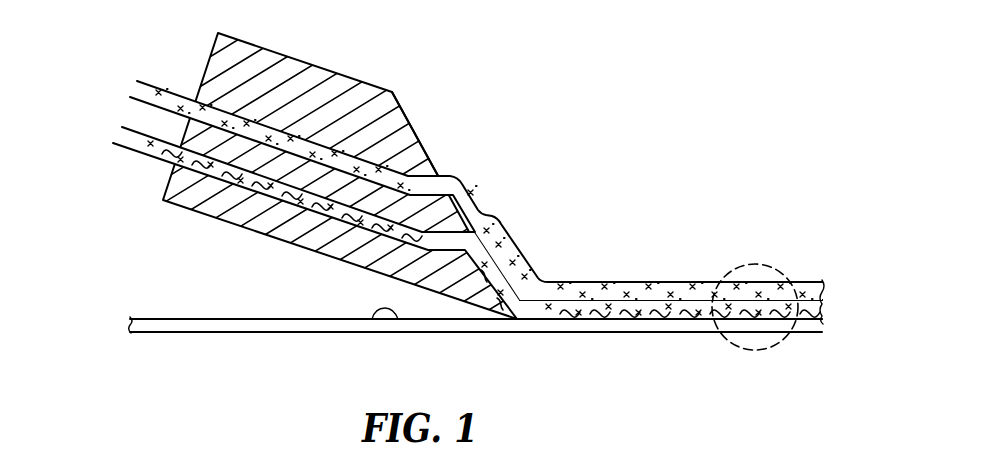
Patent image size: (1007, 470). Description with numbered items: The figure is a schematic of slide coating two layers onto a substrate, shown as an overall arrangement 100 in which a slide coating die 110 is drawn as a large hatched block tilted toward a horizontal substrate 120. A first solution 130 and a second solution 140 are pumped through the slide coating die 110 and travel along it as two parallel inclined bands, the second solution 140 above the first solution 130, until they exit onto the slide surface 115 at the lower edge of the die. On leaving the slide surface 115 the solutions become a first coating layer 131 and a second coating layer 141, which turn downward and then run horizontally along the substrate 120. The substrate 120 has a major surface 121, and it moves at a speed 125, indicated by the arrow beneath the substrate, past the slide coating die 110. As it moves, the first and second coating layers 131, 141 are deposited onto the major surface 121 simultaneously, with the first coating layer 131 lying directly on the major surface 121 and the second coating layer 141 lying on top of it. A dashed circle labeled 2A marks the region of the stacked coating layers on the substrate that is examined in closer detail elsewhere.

The assembly / system 100 is at (597, 64).
The slide coating die 110 is at (325, 68).
The slide surface 115 is at (416, 131).
The substrate 120 is at (614, 324).
The major surface 121 is at (381, 314).
The speed 125 is at (230, 360).
The first solution 130 is at (118, 130).
The first coating layer 131 is at (655, 300).
The second solution 140 is at (132, 82).
The second coating layer 141 is at (593, 282).
The detail region shown in FIG. 2A is at (760, 263).